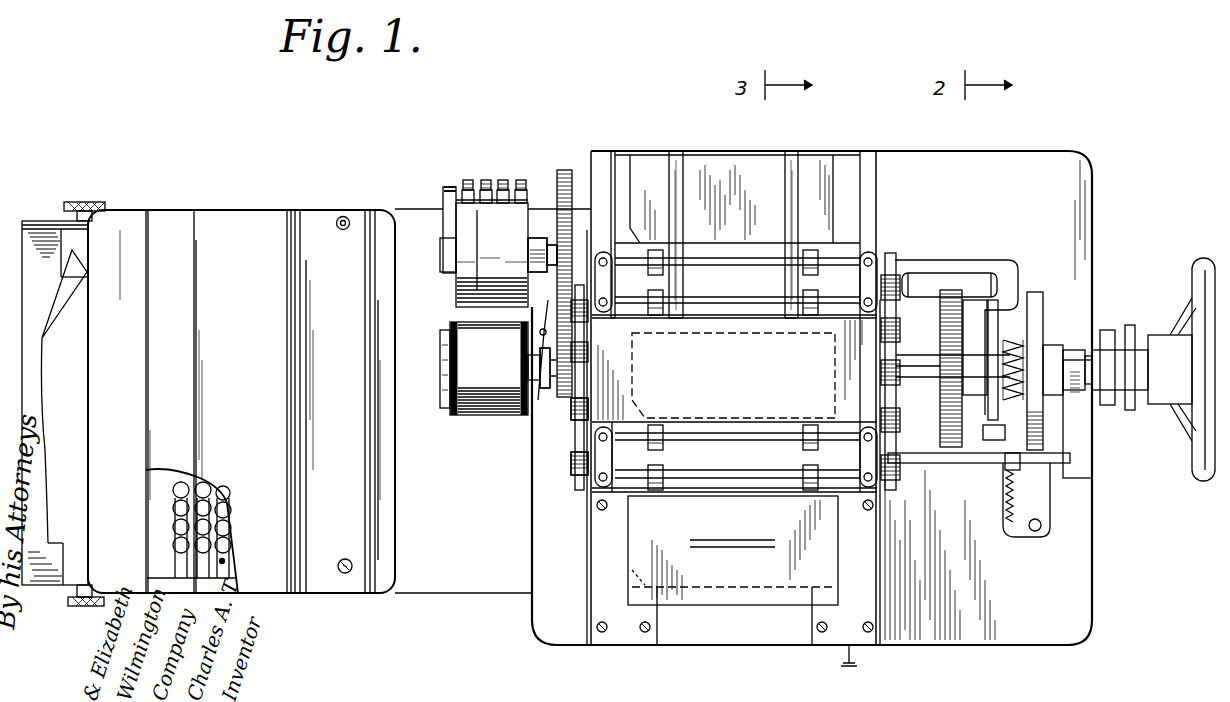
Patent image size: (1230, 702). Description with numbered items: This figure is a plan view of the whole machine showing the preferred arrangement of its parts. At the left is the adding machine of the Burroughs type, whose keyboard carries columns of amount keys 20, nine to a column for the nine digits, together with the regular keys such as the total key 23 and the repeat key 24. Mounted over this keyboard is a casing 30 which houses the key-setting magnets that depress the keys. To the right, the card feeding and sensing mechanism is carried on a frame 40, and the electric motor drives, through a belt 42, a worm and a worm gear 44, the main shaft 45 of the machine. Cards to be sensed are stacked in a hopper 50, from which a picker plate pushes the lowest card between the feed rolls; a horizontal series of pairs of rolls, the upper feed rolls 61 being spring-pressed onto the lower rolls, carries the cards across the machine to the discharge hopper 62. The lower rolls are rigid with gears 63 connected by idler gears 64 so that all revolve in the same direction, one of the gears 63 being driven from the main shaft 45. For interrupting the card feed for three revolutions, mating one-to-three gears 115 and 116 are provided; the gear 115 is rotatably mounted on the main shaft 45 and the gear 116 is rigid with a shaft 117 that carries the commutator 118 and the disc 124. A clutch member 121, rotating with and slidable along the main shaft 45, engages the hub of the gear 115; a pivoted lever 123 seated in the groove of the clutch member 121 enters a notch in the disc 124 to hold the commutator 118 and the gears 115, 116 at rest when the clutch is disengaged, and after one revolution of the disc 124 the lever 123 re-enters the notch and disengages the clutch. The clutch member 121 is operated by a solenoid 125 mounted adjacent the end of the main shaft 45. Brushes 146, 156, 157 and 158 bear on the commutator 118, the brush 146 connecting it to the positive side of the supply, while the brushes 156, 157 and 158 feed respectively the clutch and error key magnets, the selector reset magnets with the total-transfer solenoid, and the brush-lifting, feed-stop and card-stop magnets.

The amount keys 20 is at (222, 529).
The total key 23 is at (347, 575).
The repeat key 24 is at (348, 217).
The casing 30 is at (270, 573).
The frame 40 is at (487, 582).
The belt 42 is at (940, 284).
The worm gear 44 is at (948, 447).
The main shaft 45 is at (914, 382).
The hopper 50 is at (723, 592).
The upper feed rolls 61 is at (663, 298).
The discharge hopper 62 is at (768, 162).
The gears 63 is at (578, 488).
The idler gears 64 is at (572, 426).
The gear 115 is at (562, 394).
The gear 116 is at (562, 172).
The shaft 117 is at (536, 248).
The commutator 118 is at (477, 300).
The clutch member 121 is at (538, 402).
The lever 123 is at (545, 310).
The disc 124 is at (534, 274).
The solenoid 125 is at (484, 403).
The brush 146 is at (486, 190).
The brush 156 is at (468, 190).
The brush 157 is at (521, 188).
The brush 158 is at (503, 188).